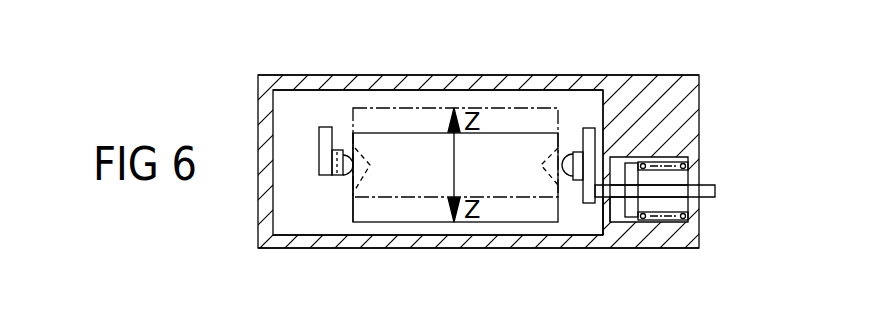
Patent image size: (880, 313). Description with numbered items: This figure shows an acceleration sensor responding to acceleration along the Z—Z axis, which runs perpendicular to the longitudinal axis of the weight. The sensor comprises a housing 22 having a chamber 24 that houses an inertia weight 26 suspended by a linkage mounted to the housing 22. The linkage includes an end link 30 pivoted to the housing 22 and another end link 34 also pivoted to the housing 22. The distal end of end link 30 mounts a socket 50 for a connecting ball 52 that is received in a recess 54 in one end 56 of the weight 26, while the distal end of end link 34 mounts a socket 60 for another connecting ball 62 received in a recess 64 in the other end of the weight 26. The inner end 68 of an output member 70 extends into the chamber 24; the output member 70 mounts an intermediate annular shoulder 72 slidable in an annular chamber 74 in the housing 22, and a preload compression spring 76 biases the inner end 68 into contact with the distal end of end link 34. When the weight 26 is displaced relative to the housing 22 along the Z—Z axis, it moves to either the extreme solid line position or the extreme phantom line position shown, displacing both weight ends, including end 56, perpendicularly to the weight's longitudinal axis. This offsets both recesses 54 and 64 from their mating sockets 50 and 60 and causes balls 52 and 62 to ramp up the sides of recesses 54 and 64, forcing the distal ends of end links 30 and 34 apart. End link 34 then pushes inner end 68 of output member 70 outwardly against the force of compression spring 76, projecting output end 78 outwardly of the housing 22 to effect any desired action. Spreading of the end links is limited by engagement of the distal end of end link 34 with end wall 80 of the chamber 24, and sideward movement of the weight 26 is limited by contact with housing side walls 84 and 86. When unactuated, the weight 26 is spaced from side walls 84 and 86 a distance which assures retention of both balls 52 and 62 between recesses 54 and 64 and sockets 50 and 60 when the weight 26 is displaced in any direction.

The housing 22 is at (688, 85).
The chamber 24 is at (296, 113).
The inertia weight 26 is at (432, 211).
The end link 30 is at (319, 143).
The end link 34 is at (598, 128).
The socket 50 is at (337, 177).
The connecting ball 52 is at (345, 158).
The recess 54 is at (358, 150).
The end of weight 56 is at (357, 205).
The socket 60 is at (589, 133).
The connecting ball 62 is at (575, 152).
The recess 64 is at (540, 157).
The inner end 68 is at (650, 155).
The output member 70 is at (667, 190).
The annular shoulder 72 is at (650, 162).
The annular chamber 74 is at (619, 208).
The preload compression spring 76 is at (642, 216).
The output end 78 is at (715, 191).
The end wall 80 is at (607, 223).
The housing side wall 84 is at (402, 90).
The housing side wall 86 is at (370, 238).